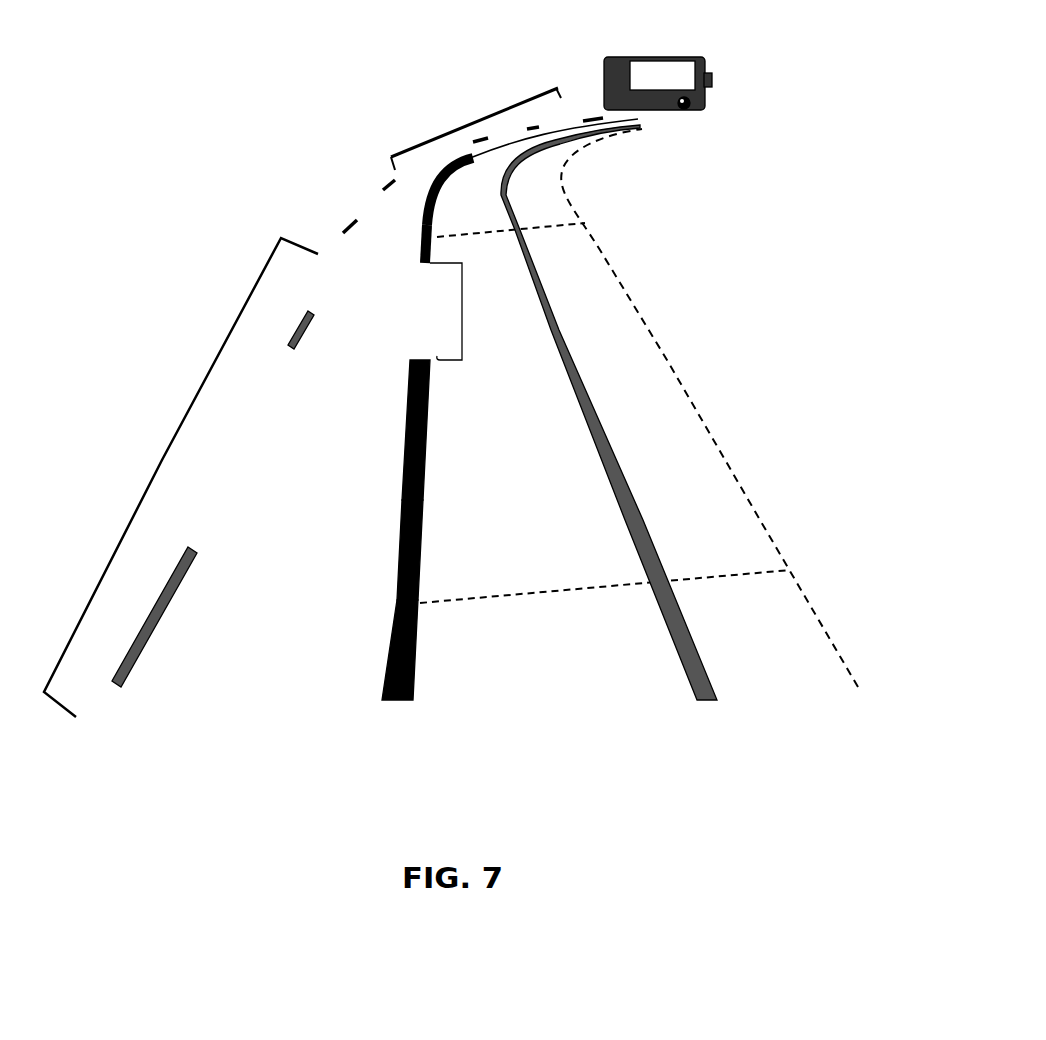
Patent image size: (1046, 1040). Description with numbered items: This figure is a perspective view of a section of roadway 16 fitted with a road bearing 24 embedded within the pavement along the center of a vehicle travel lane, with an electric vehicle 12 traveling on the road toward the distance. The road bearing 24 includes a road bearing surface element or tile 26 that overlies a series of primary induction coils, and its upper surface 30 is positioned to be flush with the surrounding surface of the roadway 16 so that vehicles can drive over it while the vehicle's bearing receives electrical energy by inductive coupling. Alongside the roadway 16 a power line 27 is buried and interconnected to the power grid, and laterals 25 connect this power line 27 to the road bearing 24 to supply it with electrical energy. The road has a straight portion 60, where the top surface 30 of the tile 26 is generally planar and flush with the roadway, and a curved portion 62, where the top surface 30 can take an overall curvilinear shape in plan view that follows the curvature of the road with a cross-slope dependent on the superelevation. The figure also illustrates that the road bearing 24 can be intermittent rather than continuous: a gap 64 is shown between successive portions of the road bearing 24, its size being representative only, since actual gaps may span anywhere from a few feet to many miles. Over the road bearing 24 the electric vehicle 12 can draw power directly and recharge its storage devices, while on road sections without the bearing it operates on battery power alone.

The electric vehicle 12 is at (597, 83).
The roadway 16 is at (400, 262).
The road bearing 24 is at (468, 158).
The lateral 25 is at (560, 230).
The road bearing surface element 26 is at (435, 250).
The power line 27 is at (624, 281).
The upper surface 30 is at (455, 182).
The straight portion 60 is at (160, 461).
The curved portion 62 is at (472, 120).
The gap 64 is at (464, 312).